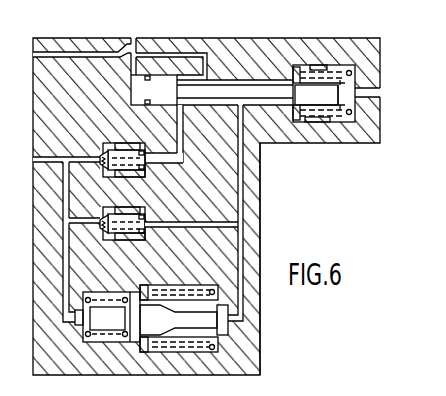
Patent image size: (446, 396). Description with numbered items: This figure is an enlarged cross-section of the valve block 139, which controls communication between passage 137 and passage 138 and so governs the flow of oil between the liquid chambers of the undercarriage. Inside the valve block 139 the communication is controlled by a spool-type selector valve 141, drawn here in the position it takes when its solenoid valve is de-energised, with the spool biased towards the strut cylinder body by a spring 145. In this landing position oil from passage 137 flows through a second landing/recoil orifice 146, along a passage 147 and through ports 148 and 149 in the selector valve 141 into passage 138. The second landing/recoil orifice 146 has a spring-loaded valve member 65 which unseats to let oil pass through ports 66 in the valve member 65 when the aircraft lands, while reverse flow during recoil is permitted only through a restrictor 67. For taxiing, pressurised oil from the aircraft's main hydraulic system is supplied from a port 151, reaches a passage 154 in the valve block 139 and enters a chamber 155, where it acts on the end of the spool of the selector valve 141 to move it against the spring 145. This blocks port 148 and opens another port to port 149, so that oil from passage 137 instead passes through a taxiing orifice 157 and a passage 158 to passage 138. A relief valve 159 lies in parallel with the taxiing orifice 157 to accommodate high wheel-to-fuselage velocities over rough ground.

The passage 138 is at (60, 56).
The valve block 139 is at (264, 222).
The passage 154 is at (133, 47).
The port 149 is at (218, 66).
The port 148 is at (186, 111).
The chamber 155 is at (131, 79).
The spool-type selector valve 141 is at (322, 123).
The spring 145 is at (346, 123).
The passage 147 is at (183, 150).
The second landing/recoil orifice 146 is at (150, 172).
The passage 137 is at (43, 163).
The ports 66 is at (118, 178).
The spring-loaded valve member 65 is at (118, 145).
The restrictor 67 is at (97, 157).
The taxiing orifice 157 is at (150, 216).
The passage 158 is at (244, 160).
The relief valve 159 is at (231, 346).
The port 151 is at (317, 389).